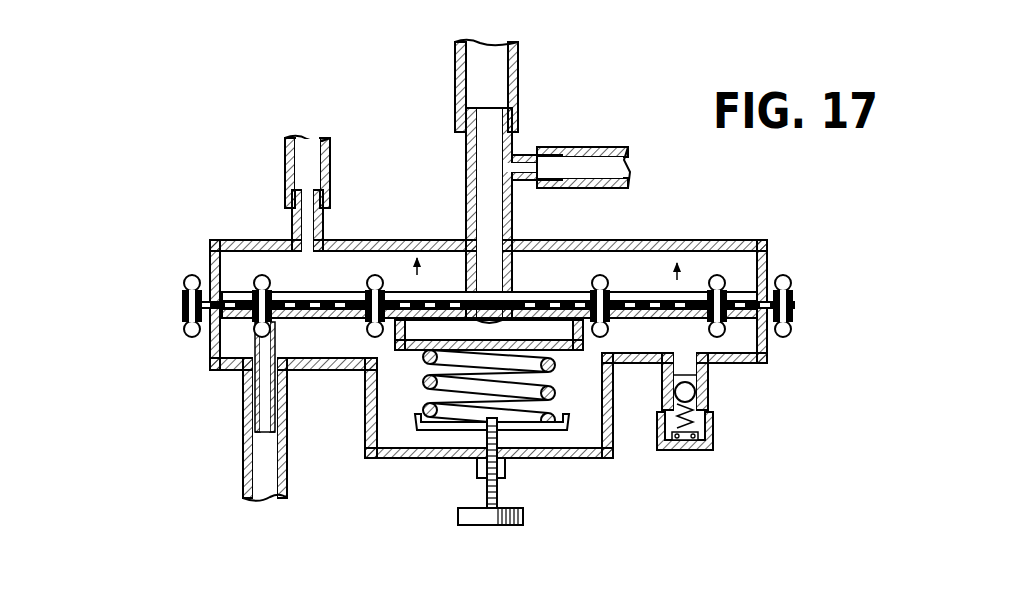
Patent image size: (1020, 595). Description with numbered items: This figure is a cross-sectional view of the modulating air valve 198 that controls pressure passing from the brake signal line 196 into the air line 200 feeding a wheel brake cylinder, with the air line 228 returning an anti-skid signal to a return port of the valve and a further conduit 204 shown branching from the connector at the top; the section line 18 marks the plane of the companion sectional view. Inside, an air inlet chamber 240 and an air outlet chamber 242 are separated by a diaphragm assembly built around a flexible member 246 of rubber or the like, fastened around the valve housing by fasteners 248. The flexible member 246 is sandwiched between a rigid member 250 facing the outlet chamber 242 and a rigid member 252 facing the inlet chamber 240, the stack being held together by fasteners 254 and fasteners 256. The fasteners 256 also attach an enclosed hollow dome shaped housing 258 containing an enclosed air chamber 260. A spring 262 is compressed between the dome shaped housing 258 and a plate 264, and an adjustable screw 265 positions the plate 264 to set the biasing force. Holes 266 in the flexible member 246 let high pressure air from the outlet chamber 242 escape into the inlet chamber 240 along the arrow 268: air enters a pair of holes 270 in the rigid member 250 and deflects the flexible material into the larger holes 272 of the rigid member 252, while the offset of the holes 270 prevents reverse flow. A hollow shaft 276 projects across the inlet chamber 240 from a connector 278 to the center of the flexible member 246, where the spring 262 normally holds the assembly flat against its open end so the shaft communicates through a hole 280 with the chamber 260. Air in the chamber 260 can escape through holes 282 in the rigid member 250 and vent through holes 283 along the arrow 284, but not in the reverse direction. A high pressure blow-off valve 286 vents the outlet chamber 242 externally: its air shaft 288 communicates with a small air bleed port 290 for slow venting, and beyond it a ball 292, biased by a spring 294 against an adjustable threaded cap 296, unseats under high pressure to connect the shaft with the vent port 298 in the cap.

The section line 18 is at (180, 258).
The line 196 is at (285, 160).
The modulating air valve 198 is at (222, 232).
The air line 200 is at (518, 72).
The branch conduit 204 is at (580, 152).
The air line 228 is at (243, 470).
The air inlet chamber 240 is at (342, 246).
The air outlet chamber 242 is at (760, 330).
The flexible member 246 is at (760, 262).
The fasteners 248 is at (192, 270).
The rigid member 250 is at (235, 358).
The rigid member 252 is at (745, 292).
The fasteners 254 is at (262, 278).
The fasteners 256 is at (367, 406).
The dome shaped housing 258 is at (367, 440).
The air chamber 260 is at (424, 355).
The spring 262 is at (422, 428).
The plate 264 is at (445, 434).
The adjustable screw 265 is at (497, 527).
The holes 266 is at (690, 300).
The arrow 268 is at (652, 295).
The holes 270 is at (322, 322).
The holes 272 is at (303, 284).
The hollow shaft 276 is at (475, 156).
The connector 278 is at (522, 152).
The hole 280 is at (565, 340).
The holes 282 is at (535, 296).
The holes 283 is at (385, 294).
The arrow 284 is at (434, 240).
The high pressure blow-off valve 286 is at (652, 394).
The air shaft 288 is at (708, 357).
The air bleed port 290 is at (708, 376).
The ball 292 is at (708, 400).
The spring 294 is at (657, 430).
The adjustable threaded cap 296 is at (670, 452).
The vent port 298 is at (688, 450).